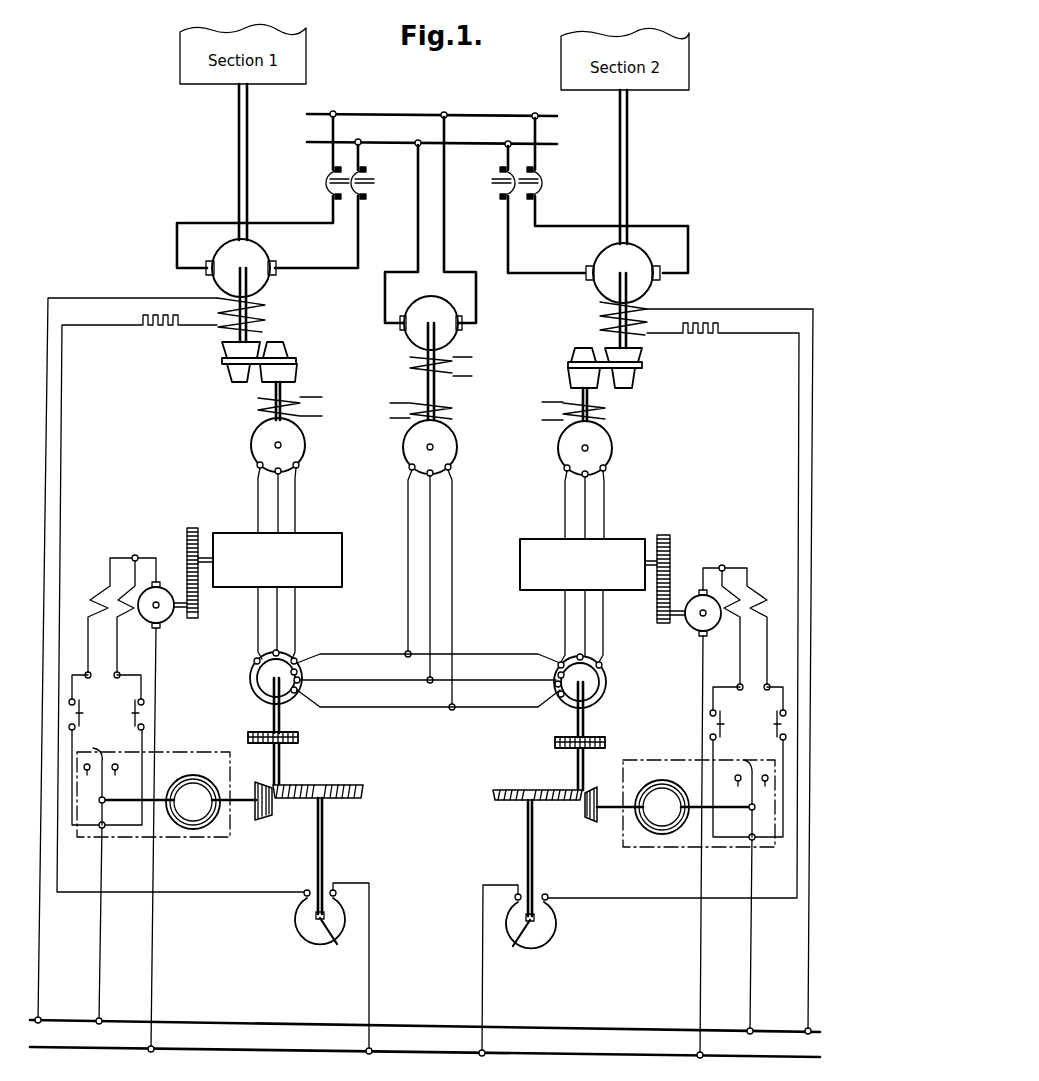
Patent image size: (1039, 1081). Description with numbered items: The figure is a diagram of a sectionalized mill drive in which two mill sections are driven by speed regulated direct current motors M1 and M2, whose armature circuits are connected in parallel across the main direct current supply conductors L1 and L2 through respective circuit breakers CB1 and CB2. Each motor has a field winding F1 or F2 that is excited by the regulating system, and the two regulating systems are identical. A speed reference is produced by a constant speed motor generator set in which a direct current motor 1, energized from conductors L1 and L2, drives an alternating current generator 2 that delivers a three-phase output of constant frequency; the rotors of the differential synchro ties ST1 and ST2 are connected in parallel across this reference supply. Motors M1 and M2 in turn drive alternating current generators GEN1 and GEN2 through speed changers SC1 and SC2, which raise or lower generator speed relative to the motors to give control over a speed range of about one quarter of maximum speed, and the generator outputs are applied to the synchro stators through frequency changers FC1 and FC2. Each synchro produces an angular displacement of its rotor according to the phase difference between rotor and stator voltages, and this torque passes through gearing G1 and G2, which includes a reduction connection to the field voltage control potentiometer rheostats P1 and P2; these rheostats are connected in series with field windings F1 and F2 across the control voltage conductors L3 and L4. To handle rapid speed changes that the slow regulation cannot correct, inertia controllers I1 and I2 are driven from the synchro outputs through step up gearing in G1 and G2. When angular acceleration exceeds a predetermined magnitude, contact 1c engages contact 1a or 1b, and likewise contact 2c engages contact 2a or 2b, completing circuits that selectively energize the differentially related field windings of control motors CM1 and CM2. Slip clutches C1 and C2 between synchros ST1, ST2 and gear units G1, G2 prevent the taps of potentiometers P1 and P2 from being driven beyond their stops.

The main supply conductor L1 is at (558, 116).
The main supply conductor L2 is at (558, 144).
The control voltage conductor L3 is at (608, 1027).
The control voltage conductor L4 is at (615, 1063).
The circuit breaker CB1 is at (405, 193).
The circuit breaker CB2 is at (500, 186).
The direct current motor M1 is at (294, 249).
The direct current motor M2 is at (601, 258).
The direct current motor 1 is at (446, 300).
The alternating current generator 2 is at (468, 433).
The field winding F1 is at (262, 318).
The field winding F2 is at (598, 316).
The speed changer SC1 is at (333, 356).
The speed changer SC2 is at (572, 354).
The alternating current generator GEN1 is at (348, 445).
The alternating current generator GEN2 is at (558, 445).
The frequency changer FC1 is at (378, 559).
The frequency changer FC2 is at (520, 562).
The control motor CM1 is at (200, 643).
The control motor CM2 is at (690, 627).
The differential synchro tie ST1 is at (250, 676).
The differential synchro tie ST2 is at (645, 688).
The slip clutch C1 is at (299, 738).
The slip clutch C2 is at (554, 743).
The gearing G1 is at (297, 782).
The gearing G2 is at (552, 786).
The inertia controller I1 is at (207, 758).
The inertia controller I2 is at (677, 763).
The contact 1a is at (83, 779).
The contact 1b is at (119, 779).
The contact 1c is at (100, 748).
The contact 2a is at (766, 789).
The contact 2b is at (729, 787).
The contact 2c is at (750, 760).
The field voltage control potentiometer rheostat P1 is at (312, 945).
The field voltage control potentiometer rheostat P2 is at (540, 948).